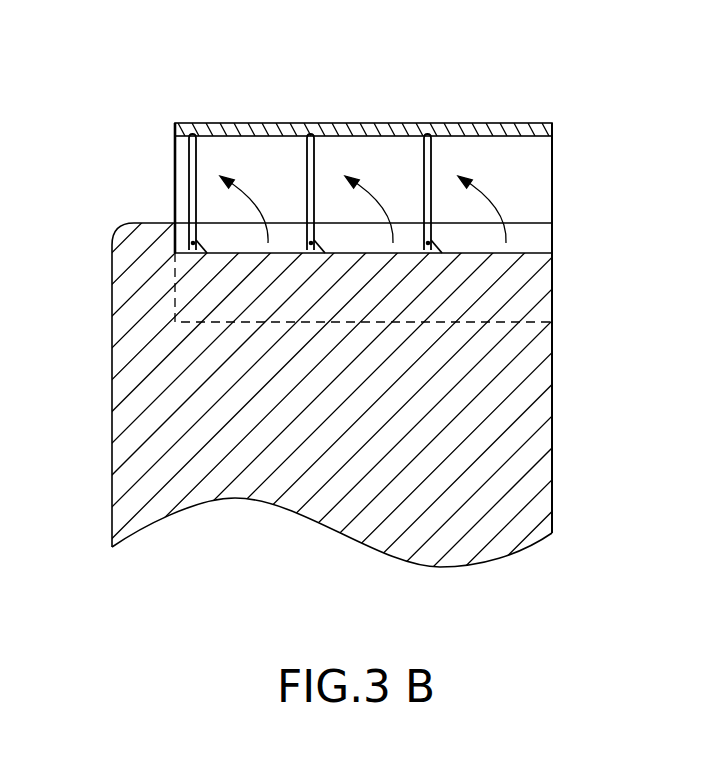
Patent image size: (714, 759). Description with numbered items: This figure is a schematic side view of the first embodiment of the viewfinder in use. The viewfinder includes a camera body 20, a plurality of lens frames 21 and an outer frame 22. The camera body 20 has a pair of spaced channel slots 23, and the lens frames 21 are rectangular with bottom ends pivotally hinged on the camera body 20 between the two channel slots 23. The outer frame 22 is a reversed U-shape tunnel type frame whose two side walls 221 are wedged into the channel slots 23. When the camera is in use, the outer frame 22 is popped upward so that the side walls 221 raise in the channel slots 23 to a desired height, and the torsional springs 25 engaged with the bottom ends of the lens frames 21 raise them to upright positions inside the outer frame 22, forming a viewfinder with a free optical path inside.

The camera body 20 is at (118, 438).
The lens frame 21 is at (427, 165).
The outer frame 22 is at (264, 123).
The side wall 221 is at (545, 178).
The channel slot 23 is at (545, 288).
The torsional spring 25 is at (200, 241).